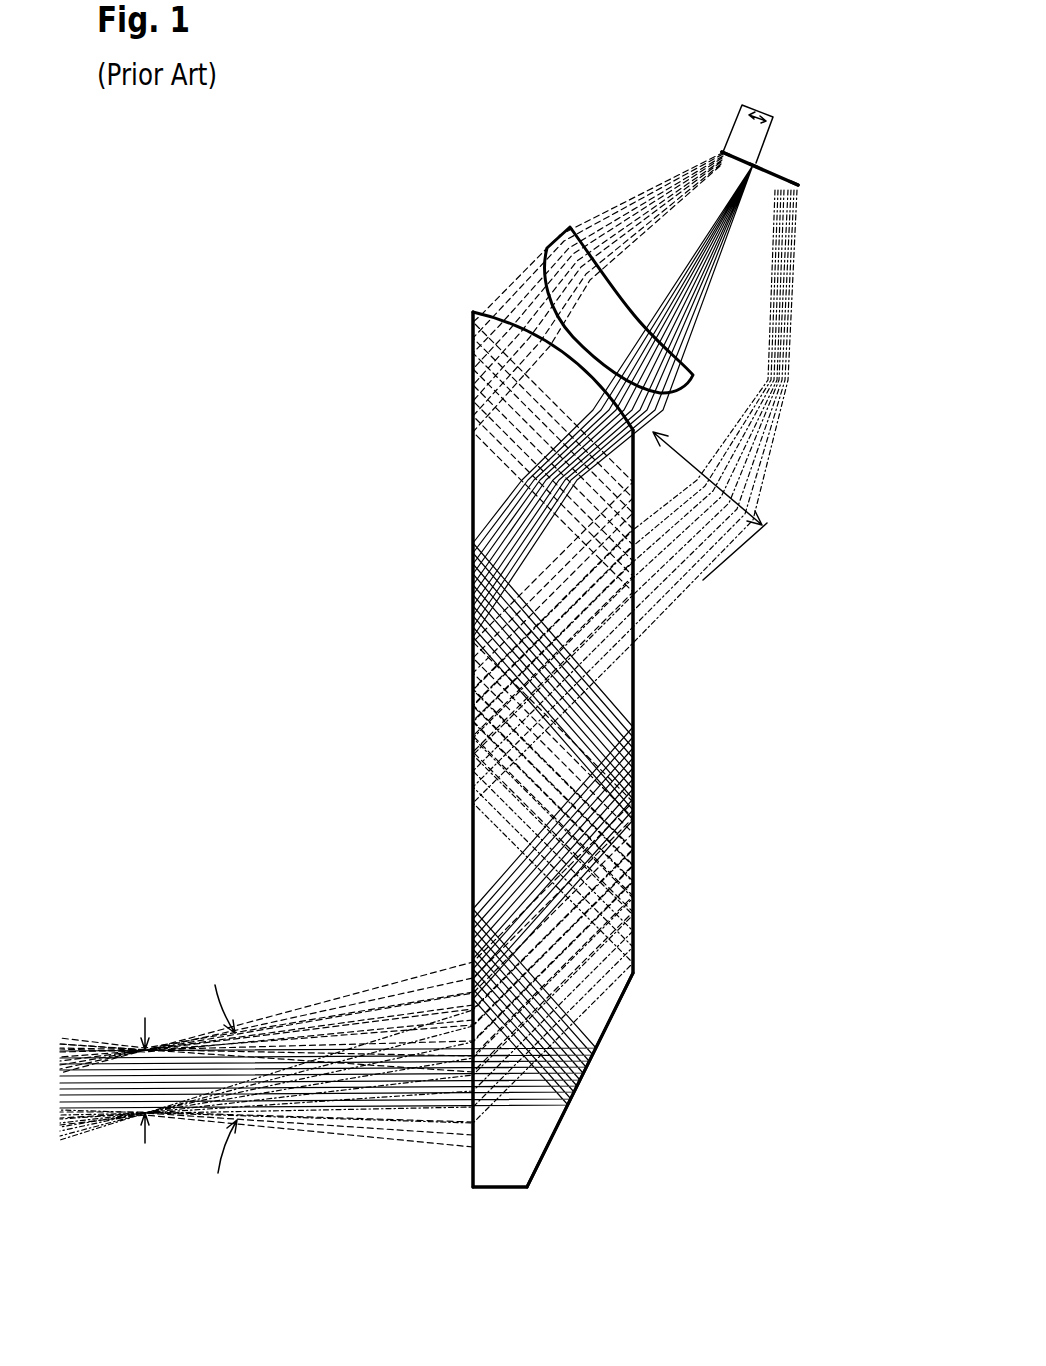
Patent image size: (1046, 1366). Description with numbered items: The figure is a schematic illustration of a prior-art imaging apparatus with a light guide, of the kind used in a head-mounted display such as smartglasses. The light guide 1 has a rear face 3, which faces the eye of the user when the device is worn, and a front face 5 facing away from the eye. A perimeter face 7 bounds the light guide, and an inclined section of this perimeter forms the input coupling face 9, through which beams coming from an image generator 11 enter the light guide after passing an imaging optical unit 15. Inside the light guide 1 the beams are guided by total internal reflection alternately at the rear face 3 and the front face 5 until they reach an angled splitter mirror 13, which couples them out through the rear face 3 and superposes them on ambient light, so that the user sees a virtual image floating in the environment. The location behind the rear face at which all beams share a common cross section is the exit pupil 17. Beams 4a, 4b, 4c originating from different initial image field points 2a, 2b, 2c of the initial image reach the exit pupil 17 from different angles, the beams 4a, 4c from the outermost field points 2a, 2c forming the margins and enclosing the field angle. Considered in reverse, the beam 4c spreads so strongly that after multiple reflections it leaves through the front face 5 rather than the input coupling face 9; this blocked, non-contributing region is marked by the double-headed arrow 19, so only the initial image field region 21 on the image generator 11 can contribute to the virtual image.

The light guide 1 is at (482, 677).
The rear face 3 is at (472, 802).
The front face 5 is at (644, 842).
The perimeter face 7 is at (500, 1188).
The input coupling face 9 is at (485, 312).
The image generator 11 is at (780, 168).
The splitter mirror 13 is at (567, 1113).
The imaging optical unit 15 is at (568, 233).
The exit pupil 17 is at (143, 1027).
The double-headed arrow 19 is at (683, 455).
The initial image field region 21 is at (761, 113).
The initial image field point 2a is at (720, 150).
The initial image field point 2b is at (755, 162).
The initial image field point 2c is at (798, 185).
The beam 4a is at (622, 215).
The beam 4b is at (708, 245).
The beam 4c is at (790, 297).